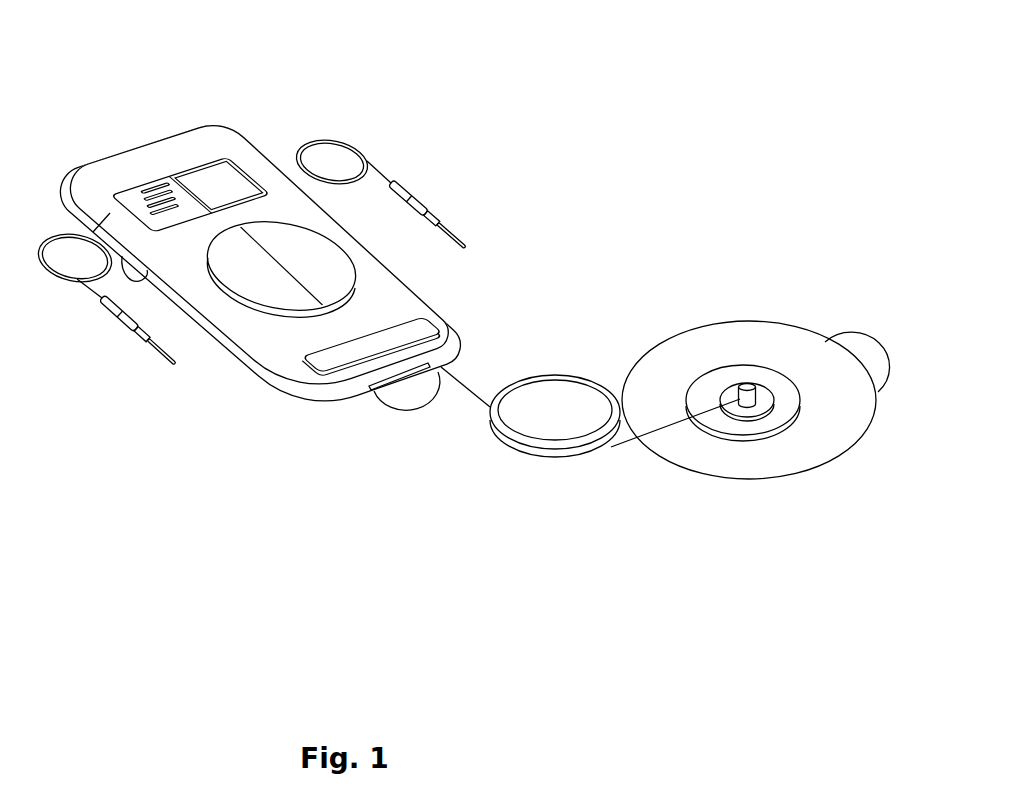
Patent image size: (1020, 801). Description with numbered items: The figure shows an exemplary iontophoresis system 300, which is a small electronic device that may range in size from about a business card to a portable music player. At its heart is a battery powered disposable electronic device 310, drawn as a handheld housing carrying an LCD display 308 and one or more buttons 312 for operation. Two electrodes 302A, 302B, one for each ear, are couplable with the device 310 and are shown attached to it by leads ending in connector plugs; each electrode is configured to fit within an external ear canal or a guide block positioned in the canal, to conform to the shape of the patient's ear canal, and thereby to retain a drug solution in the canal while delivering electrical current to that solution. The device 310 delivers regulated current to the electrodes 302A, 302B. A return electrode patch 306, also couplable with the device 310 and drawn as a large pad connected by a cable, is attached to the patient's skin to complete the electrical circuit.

The iontophoresis system 300 is at (596, 70).
The electrode 302A is at (427, 209).
The electrode 302B is at (140, 337).
The return electrode patch 306 is at (777, 460).
The LCD display 308 is at (215, 170).
The battery powered disposable electronic device 310 is at (106, 172).
The buttons 312 is at (322, 278).